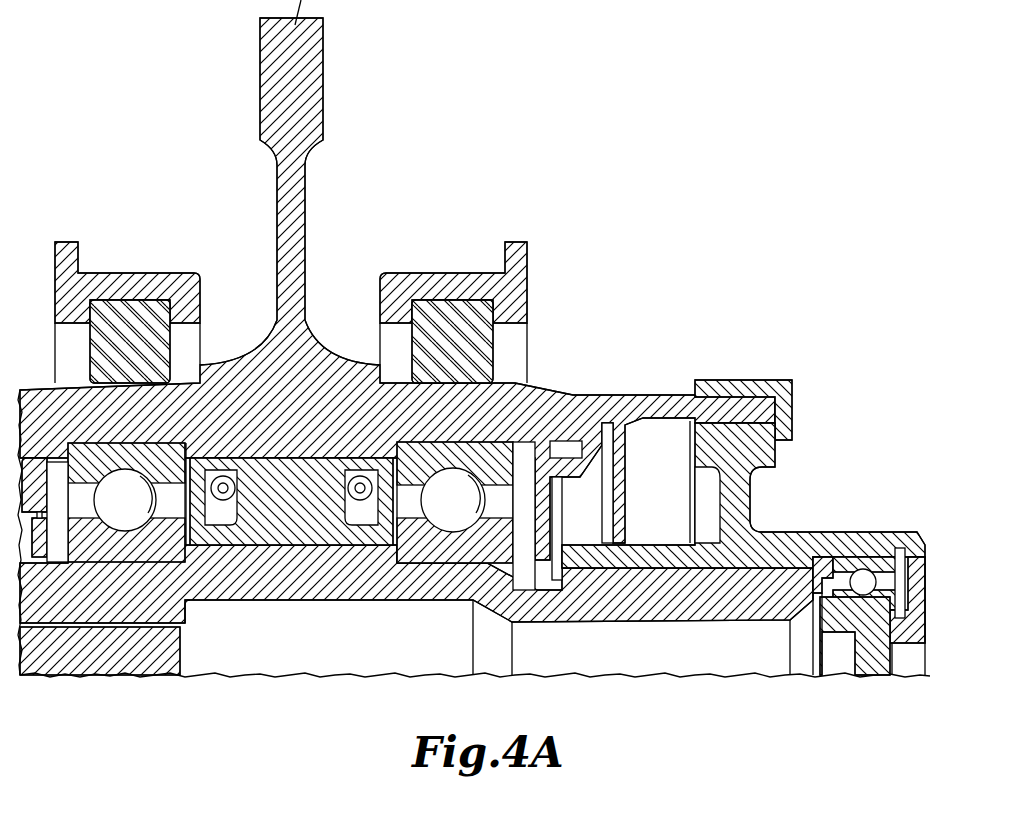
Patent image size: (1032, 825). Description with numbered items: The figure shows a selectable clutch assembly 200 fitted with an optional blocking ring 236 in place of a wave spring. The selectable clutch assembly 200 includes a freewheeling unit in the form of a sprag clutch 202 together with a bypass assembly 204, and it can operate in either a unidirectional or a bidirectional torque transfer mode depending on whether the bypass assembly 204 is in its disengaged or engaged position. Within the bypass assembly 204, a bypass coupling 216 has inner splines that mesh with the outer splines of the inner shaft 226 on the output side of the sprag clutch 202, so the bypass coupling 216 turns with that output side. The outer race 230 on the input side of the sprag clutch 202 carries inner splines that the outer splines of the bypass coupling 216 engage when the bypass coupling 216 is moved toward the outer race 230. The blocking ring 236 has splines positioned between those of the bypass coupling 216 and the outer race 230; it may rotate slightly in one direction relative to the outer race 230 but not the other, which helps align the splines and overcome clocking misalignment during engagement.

The selectable clutch assembly 200 is at (474, 357).
The sprag clutch 202 is at (456, 258).
The bypass assembly 204 is at (891, 520).
The bypass coupling 216 is at (768, 449).
The inner shaft 226 is at (648, 608).
The outer race 230 is at (550, 395).
The blocking ring 236 is at (758, 380).